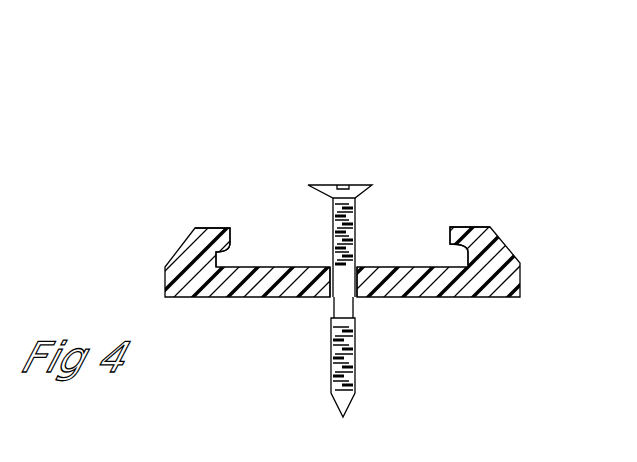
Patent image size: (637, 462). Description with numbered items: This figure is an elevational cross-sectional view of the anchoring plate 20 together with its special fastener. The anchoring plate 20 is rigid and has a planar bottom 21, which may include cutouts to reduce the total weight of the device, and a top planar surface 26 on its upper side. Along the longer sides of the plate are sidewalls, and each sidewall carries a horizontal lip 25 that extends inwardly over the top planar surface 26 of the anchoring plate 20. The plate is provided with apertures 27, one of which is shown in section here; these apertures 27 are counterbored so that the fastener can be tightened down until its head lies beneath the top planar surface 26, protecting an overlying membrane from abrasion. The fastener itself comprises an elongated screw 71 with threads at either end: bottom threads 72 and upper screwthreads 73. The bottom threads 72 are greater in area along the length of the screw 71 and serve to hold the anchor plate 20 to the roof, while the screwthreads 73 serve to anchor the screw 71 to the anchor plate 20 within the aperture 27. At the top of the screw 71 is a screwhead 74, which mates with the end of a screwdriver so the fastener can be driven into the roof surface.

The anchoring plate 20 is at (362, 267).
The planar bottom 21 is at (473, 297).
The horizontal lip 25 is at (467, 227).
The top planar surface 26 is at (289, 266).
The aperture 27 is at (362, 266).
The elongated screw 71 is at (367, 278).
The bottom threads 72 is at (356, 370).
The screwthreads 73 is at (332, 223).
The screwhead 74 is at (328, 184).